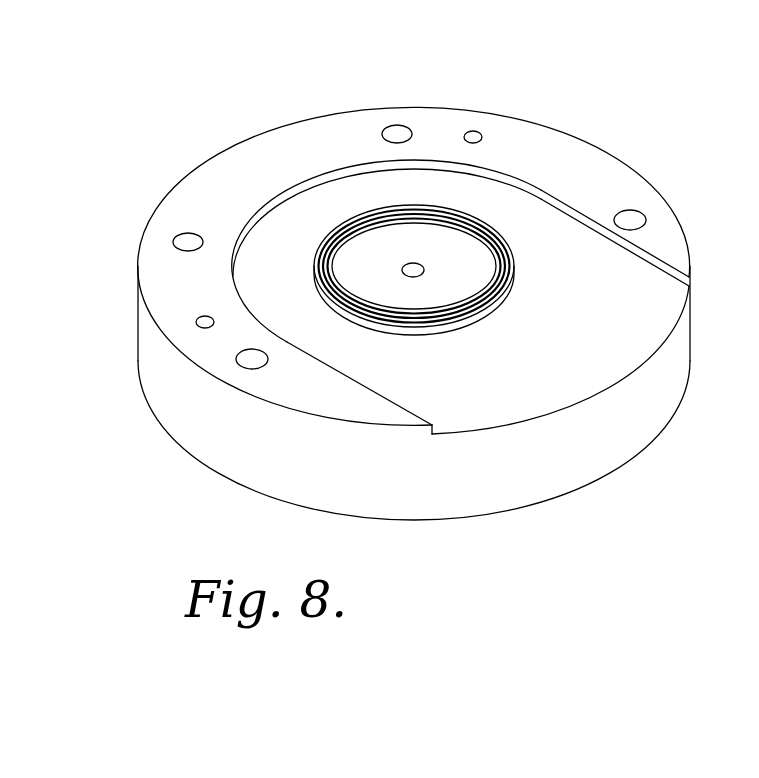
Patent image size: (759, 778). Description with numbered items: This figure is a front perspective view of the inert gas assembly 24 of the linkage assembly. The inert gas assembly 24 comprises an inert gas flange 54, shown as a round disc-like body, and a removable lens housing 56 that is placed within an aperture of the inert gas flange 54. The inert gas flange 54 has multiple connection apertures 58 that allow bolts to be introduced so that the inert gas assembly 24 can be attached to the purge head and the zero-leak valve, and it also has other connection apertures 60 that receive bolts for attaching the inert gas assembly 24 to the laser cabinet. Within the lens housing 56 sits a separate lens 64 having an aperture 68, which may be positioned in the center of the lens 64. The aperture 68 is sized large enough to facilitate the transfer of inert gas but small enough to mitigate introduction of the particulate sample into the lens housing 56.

The inert gas assembly 24 is at (596, 130).
The inert gas flange 54 is at (647, 182).
The lens housing 56 is at (441, 325).
The connection apertures 58 is at (393, 125).
The connection apertures 60 is at (478, 131).
The lens 64 is at (488, 254).
The aperture 68 is at (403, 268).